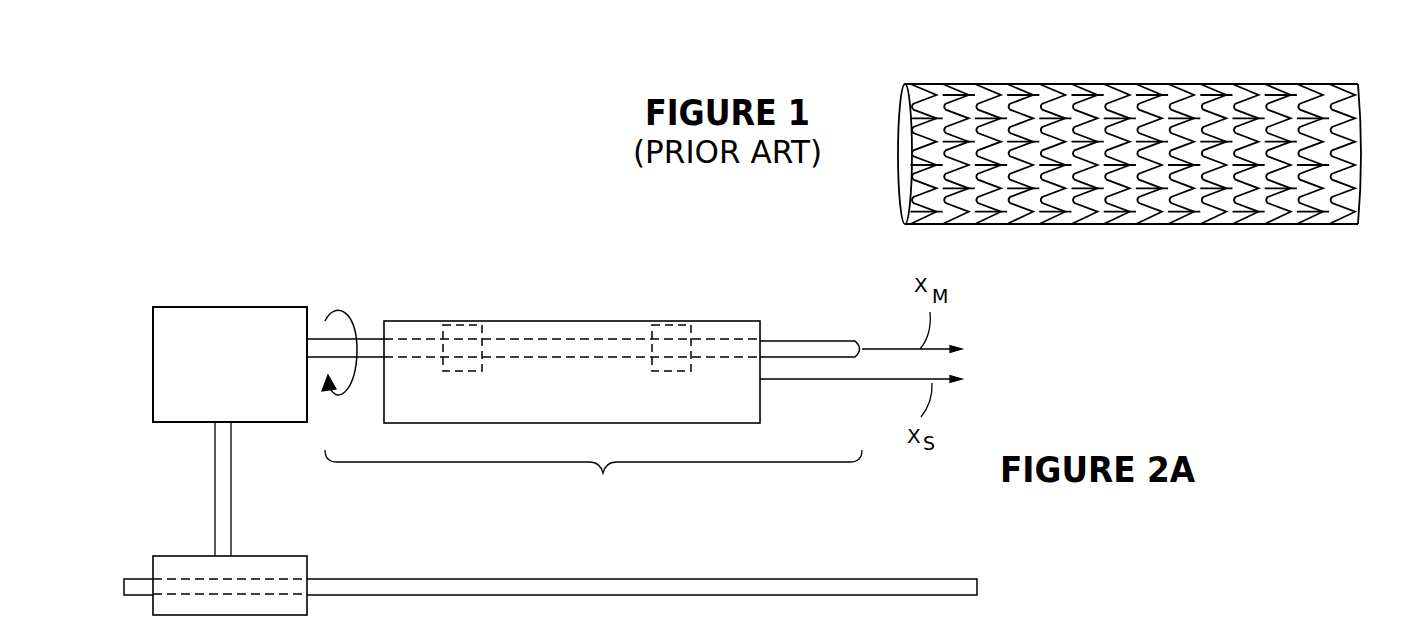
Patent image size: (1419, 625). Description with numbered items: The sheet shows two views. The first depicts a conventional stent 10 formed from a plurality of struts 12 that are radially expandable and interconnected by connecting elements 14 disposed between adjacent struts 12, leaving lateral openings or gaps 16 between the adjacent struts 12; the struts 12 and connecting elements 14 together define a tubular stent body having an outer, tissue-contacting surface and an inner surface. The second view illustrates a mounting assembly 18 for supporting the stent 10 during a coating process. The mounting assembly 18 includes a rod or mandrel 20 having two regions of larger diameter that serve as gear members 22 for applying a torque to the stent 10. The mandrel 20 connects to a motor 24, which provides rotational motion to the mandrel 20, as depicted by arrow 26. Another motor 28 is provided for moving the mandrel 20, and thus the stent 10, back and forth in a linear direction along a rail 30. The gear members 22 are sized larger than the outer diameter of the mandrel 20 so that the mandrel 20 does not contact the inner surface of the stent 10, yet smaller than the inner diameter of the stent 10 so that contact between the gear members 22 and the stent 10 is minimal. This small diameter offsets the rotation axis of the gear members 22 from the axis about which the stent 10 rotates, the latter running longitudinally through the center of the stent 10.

In FIG. 1, the stent 10 is at (1138, 126).
In FIG. 2A, the stent 10 is at (404, 322).
In FIG. 1, the struts 12 is at (1055, 100).
In FIG. 1, the connecting elements 14 is at (1141, 90).
In FIG. 1, the lateral openings or gaps 16 is at (925, 98).
In FIG. 2A, the mounting assembly 18 is at (593, 414).
In FIG. 2A, the mandrel 20 is at (797, 340).
In FIG. 2A, the gear members 22 is at (462, 330).
In FIG. 2A, the motor 24 is at (190, 318).
In FIG. 2A, the arrow 26 is at (343, 306).
In FIG. 2A, the motor 28 is at (285, 570).
In FIG. 2A, the rail 30 is at (914, 590).